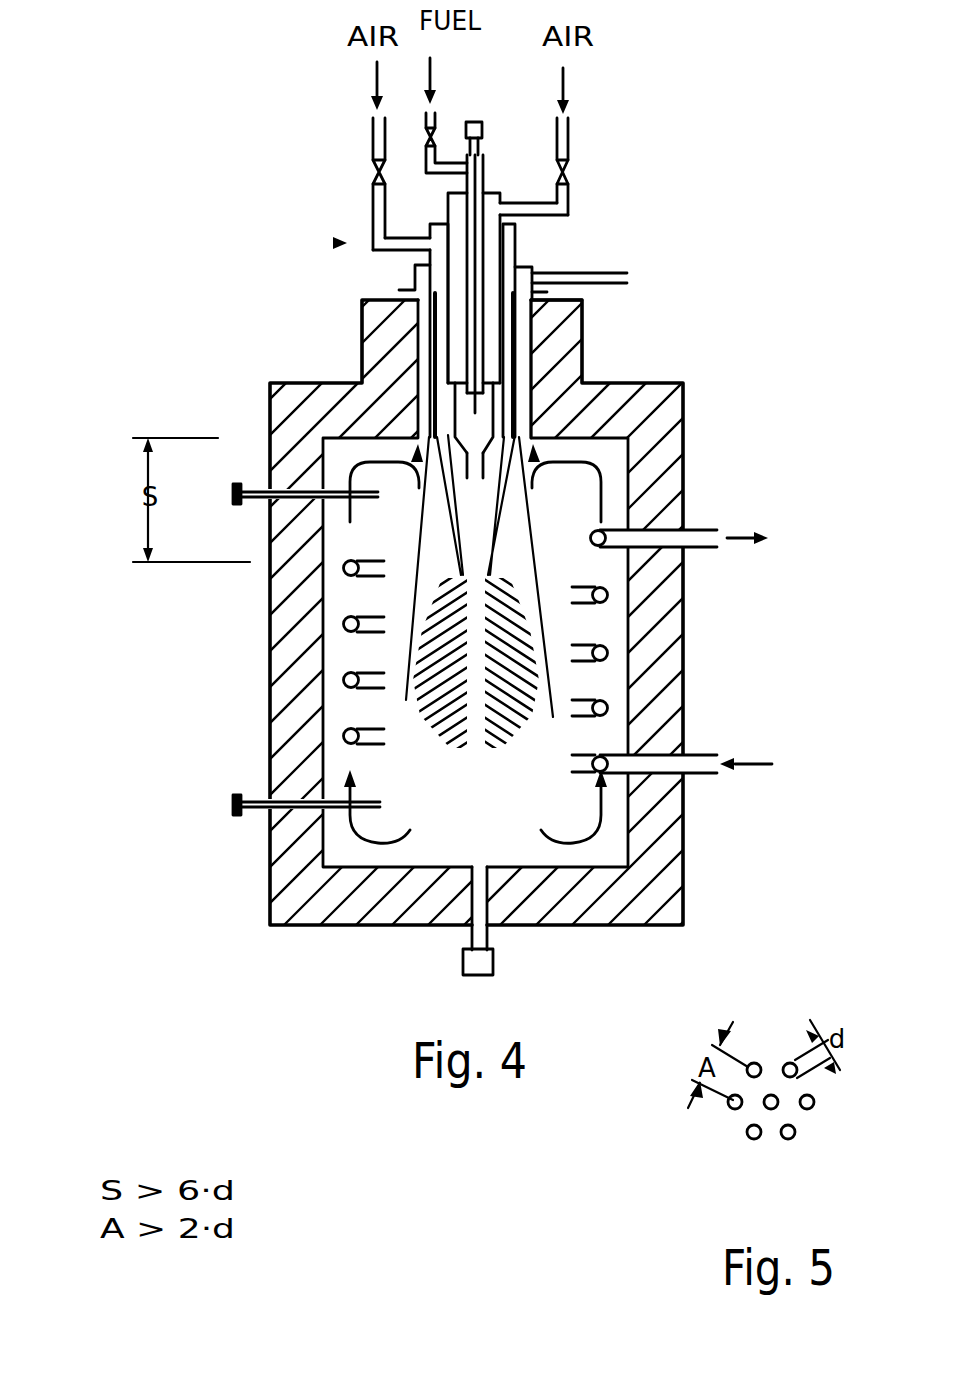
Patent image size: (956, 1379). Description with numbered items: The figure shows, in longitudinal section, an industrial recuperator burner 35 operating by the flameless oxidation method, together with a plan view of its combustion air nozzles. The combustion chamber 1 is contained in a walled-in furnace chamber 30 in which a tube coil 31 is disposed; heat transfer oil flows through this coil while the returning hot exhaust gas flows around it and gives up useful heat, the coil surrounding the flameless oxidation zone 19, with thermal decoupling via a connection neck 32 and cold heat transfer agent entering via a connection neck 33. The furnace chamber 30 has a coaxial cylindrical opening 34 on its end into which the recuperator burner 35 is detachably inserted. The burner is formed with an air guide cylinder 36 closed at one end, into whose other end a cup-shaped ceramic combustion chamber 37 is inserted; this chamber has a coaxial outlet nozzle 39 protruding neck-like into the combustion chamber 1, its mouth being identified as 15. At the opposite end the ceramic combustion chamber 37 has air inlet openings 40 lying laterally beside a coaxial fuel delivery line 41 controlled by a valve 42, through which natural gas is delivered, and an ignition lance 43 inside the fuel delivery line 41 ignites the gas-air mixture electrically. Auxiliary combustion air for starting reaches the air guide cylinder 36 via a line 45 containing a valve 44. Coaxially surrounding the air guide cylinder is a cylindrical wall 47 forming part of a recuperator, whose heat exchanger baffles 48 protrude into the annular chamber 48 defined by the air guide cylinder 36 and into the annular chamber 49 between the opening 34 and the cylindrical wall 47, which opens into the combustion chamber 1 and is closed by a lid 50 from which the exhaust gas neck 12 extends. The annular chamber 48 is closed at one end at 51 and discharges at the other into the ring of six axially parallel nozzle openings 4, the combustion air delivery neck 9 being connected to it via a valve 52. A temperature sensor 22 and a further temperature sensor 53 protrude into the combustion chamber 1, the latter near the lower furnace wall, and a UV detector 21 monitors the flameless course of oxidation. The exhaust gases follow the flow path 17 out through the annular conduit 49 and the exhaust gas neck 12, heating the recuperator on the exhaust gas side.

In FIG. 4, the combustion chamber 1 is at (476, 815).
In FIG. 4, the combustion air nozzles 4 is at (441, 507).
In FIG. 5, the combustion air nozzles 4 is at (815, 1105).
In FIG. 4, the combustion air delivery neck 9 is at (373, 225).
In FIG. 4, the exhaust gas neck 12 is at (623, 275).
In FIG. 4, the mouth of the outlet nozzle 15 is at (475, 478).
In FIG. 5, the mouth of the outlet nozzle 15 is at (771, 1112).
In FIG. 4, the flow path of the exhaust gases 17 is at (596, 843).
In FIG. 4, the flameless oxidation zone 19 is at (438, 655).
In FIG. 4, the UV detector 21 is at (494, 962).
In FIG. 4, the temperature sensor 22 is at (278, 516).
In FIG. 4, the furnace chamber 30 is at (313, 915).
In FIG. 4, the tube coil 31 is at (605, 592).
In FIG. 4, the connection neck 32 is at (717, 530).
In FIG. 4, the connection neck 33 is at (718, 755).
In FIG. 4, the coaxial cylindrical opening 34 is at (565, 392).
In FIG. 4, the recuperator burner 35 is at (333, 243).
In FIG. 4, the air guide cylinder 36 is at (447, 212).
In FIG. 4, the ceramic combustion chamber 37 is at (468, 432).
In FIG. 4, the outlet nozzle 39 is at (470, 468).
In FIG. 4, the air inlet openings 40 is at (455, 392).
In FIG. 4, the fuel delivery line 41 is at (500, 248).
In FIG. 4, the valve 42 is at (437, 135).
In FIG. 4, the ignition lance 43 is at (482, 135).
In FIG. 4, the valve 44 is at (566, 182).
In FIG. 4, the line 45 is at (568, 203).
In FIG. 4, the cylindrical wall 47 is at (520, 265).
In FIG. 4, the heat exchanger baffles / annular chamber 48 is at (433, 253).
In FIG. 4, the annular chamber 49 is at (432, 355).
In FIG. 4, the lid 50 is at (405, 291).
In FIG. 4, the closure of the annular chamber 51 is at (432, 254).
In FIG. 4, the valve 52 is at (375, 172).
In FIG. 4, the temperature sensor 53 is at (233, 808).